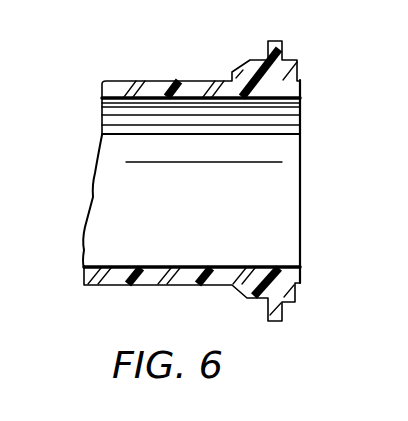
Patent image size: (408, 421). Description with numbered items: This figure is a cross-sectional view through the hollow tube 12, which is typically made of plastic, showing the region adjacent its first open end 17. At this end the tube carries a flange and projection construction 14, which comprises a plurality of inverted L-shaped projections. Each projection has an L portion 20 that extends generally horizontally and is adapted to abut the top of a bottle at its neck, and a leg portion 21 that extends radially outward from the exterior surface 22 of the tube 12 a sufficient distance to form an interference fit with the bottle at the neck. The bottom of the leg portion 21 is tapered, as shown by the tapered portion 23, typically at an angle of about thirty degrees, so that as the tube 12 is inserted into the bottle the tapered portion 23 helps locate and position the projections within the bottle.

The hollow tube 12 is at (102, 95).
The flange and projection construction 14 is at (289, 315).
The first open end 17 is at (284, 162).
The L portion 20 is at (283, 55).
The leg portion 21 is at (250, 61).
The exterior surface 22 is at (132, 81).
The tapered portion 23 is at (232, 296).